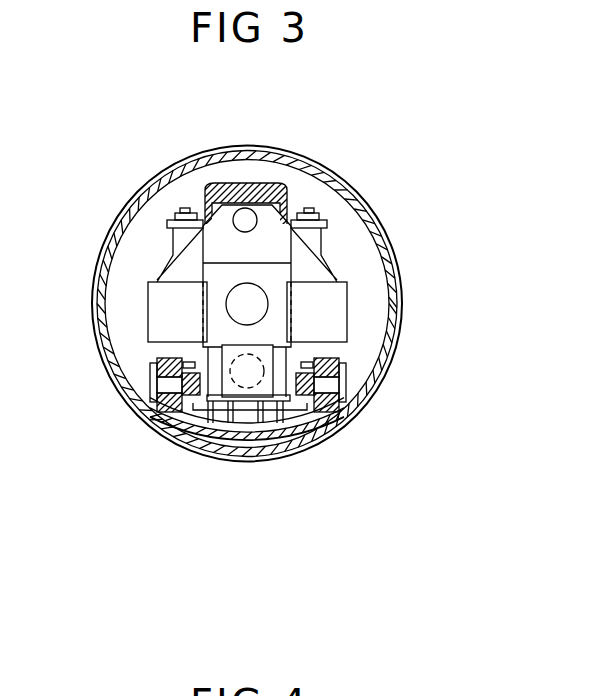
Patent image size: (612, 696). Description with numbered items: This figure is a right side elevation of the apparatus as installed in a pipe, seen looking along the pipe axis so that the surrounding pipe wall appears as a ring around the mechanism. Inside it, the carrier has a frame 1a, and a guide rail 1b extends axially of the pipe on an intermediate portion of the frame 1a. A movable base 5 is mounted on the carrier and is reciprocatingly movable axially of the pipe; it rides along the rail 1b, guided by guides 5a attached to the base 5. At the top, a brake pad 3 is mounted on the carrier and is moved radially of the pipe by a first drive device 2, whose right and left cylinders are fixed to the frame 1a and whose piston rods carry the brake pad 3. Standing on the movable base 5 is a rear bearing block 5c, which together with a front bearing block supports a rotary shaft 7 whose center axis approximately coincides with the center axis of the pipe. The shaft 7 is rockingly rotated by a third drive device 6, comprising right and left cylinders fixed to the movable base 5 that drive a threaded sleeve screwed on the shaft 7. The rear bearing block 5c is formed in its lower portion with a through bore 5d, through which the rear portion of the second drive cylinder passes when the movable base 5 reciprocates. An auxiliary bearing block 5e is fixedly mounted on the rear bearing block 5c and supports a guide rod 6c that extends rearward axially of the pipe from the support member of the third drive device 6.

The frame 1a is at (187, 446).
The guide rail 1b is at (251, 446).
The first drive device 2 is at (172, 240).
The brake pad 3 is at (246, 190).
The movable base 5 is at (270, 446).
The guides 5a is at (226, 443).
The rear bearing block 5c is at (253, 296).
The through bore 5d is at (275, 350).
The auxiliary bearing block 5e is at (222, 237).
The third drive device 6 is at (166, 321).
The guide rod 6c is at (262, 208).
The rotary shaft 7 is at (293, 310).